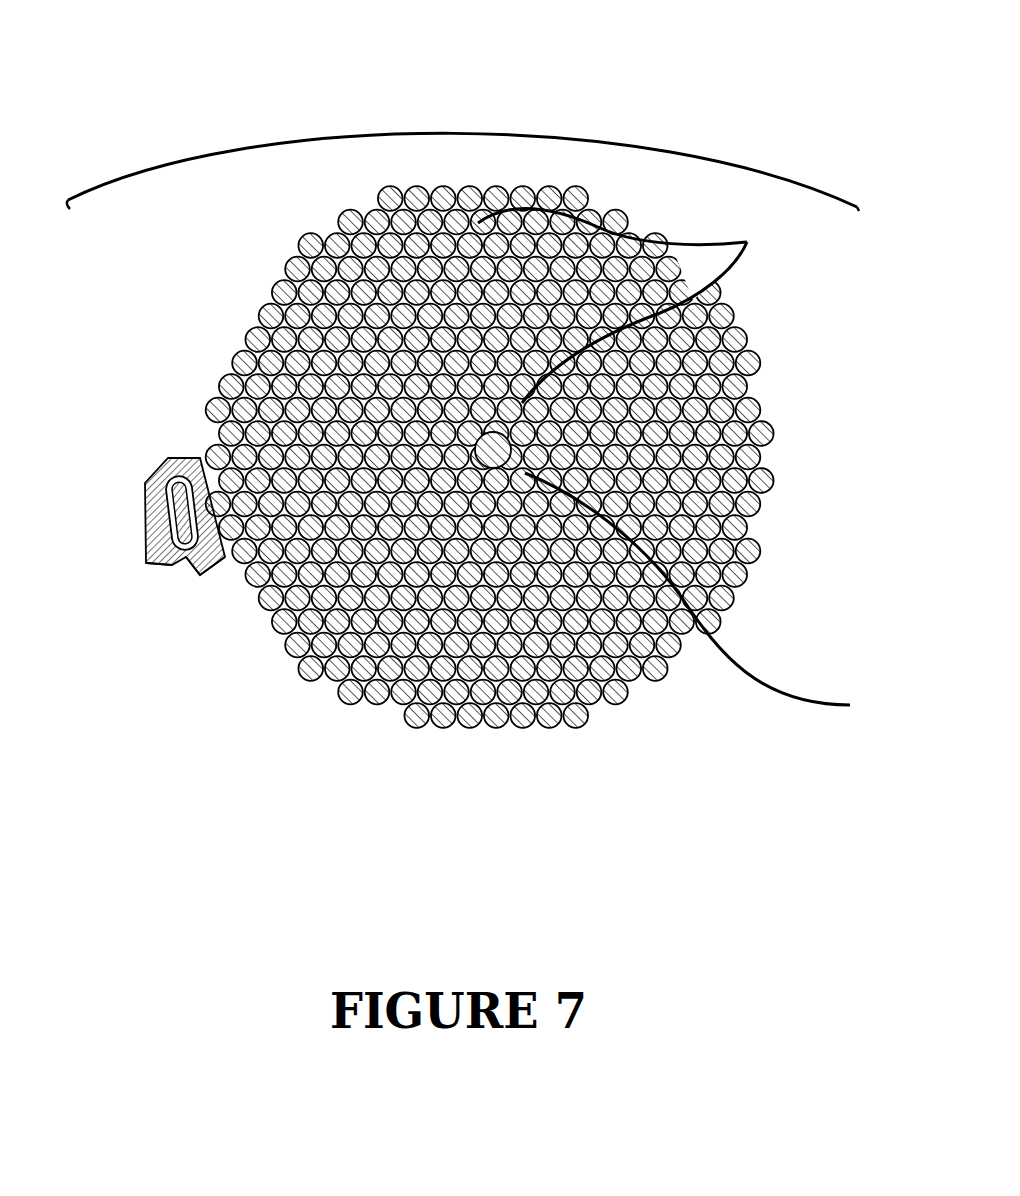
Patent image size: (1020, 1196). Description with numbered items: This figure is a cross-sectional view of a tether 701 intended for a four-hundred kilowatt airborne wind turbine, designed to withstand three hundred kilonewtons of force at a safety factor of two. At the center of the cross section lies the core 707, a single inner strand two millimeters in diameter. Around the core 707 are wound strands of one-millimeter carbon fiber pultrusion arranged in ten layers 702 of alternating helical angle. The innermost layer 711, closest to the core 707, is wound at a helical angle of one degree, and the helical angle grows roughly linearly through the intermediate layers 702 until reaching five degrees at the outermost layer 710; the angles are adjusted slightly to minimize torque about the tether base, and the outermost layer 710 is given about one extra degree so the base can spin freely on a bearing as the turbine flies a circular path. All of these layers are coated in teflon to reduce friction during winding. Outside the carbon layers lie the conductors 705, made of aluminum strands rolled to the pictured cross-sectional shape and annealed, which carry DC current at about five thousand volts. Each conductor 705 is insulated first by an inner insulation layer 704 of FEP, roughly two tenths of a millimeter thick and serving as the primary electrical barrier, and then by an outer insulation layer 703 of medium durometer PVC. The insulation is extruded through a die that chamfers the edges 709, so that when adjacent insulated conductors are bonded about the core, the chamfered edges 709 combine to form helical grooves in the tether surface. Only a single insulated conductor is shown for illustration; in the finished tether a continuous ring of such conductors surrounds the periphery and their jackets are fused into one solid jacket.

The tether 701 is at (462, 133).
The layers 702 is at (747, 242).
The outer insulation layer 703 is at (178, 457).
The inner insulation layer 704 is at (208, 577).
The conductors 705 is at (173, 497).
The core 707 is at (483, 458).
The chamfered edges 709 is at (173, 570).
The outermost layer 710 is at (547, 722).
The innermost layer 711 is at (710, 594).